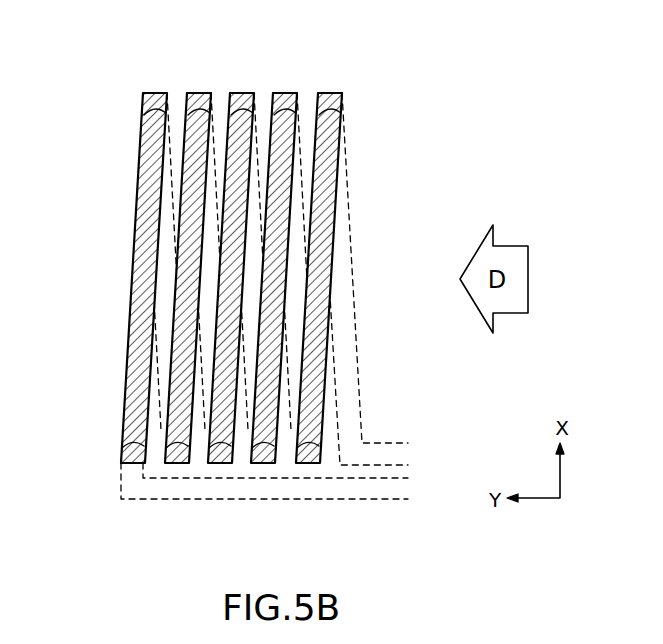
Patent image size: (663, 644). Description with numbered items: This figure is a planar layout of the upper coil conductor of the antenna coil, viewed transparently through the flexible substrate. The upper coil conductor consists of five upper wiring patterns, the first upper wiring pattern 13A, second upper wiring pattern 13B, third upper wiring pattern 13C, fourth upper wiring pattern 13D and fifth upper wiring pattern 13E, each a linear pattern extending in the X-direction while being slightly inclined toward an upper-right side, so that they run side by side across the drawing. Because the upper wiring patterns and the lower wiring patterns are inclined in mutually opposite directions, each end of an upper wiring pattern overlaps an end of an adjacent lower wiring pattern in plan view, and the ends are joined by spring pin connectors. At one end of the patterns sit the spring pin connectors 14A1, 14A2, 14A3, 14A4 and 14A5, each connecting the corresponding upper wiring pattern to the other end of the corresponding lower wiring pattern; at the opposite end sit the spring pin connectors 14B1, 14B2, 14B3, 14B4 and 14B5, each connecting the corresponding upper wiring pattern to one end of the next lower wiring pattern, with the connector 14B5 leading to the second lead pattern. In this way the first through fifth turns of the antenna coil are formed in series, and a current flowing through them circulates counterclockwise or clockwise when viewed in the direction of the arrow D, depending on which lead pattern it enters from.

The first upper wiring pattern 13A is at (332, 221).
The second upper wiring pattern 13B is at (284, 326).
The third upper wiring pattern 13C is at (232, 195).
The fourth upper wiring pattern 13D is at (187, 277).
The fifth upper wiring pattern 13E is at (133, 357).
The spring pin connector 14A1 is at (330, 92).
The spring pin connector 14A2 is at (285, 92).
The spring pin connector 14A3 is at (242, 92).
The spring pin connector 14A4 is at (198, 92).
The spring pin connector 14A5 is at (152, 92).
The spring pin connector 14B1 is at (308, 465).
The spring pin connector 14B2 is at (265, 465).
The spring pin connector 14B3 is at (221, 465).
The spring pin connector 14B4 is at (177, 465).
The spring pin connector 14B5 is at (121, 460).